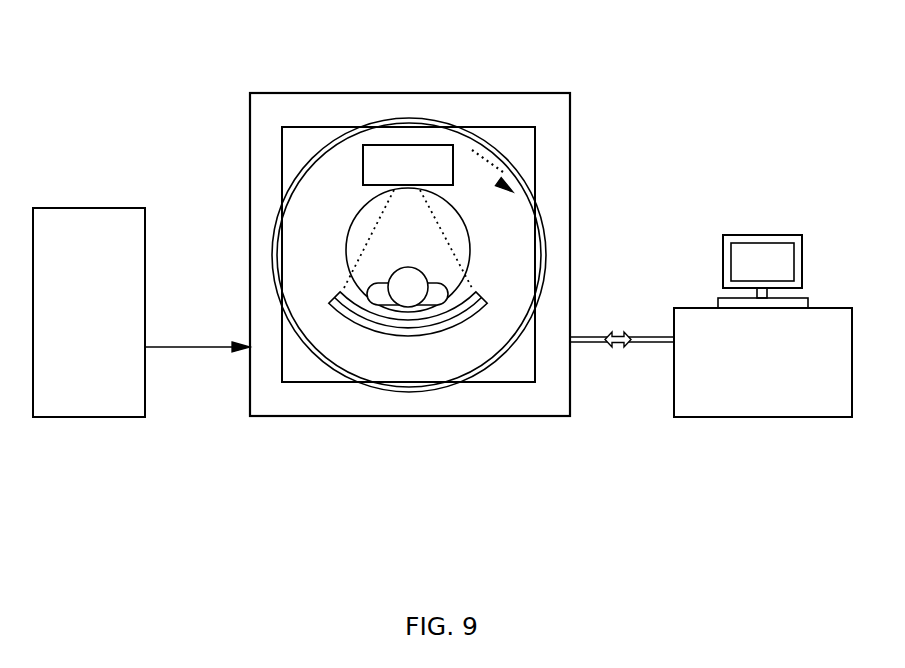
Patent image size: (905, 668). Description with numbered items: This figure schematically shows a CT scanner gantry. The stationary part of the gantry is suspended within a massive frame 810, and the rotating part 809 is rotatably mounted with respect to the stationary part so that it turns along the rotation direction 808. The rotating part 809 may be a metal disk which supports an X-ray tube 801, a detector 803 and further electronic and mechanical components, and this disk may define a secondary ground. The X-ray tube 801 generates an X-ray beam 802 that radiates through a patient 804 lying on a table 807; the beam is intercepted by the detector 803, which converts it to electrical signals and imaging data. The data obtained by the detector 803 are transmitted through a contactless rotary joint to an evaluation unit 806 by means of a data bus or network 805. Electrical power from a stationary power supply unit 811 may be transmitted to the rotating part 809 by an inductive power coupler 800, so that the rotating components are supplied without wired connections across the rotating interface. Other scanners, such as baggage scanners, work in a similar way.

The inductive power coupler 800 is at (542, 247).
The X-ray tube 801 is at (410, 165).
The X-ray beam 802 is at (368, 235).
The detector 803 is at (338, 295).
The patient 804 is at (440, 293).
The data bus or network 805 is at (618, 345).
The evaluation unit 806 is at (765, 393).
The table 807 is at (418, 308).
The rotation direction 808 is at (504, 163).
The rotating part 809 is at (520, 225).
The frame 810 is at (550, 180).
The stationary power supply unit 811 is at (93, 228).